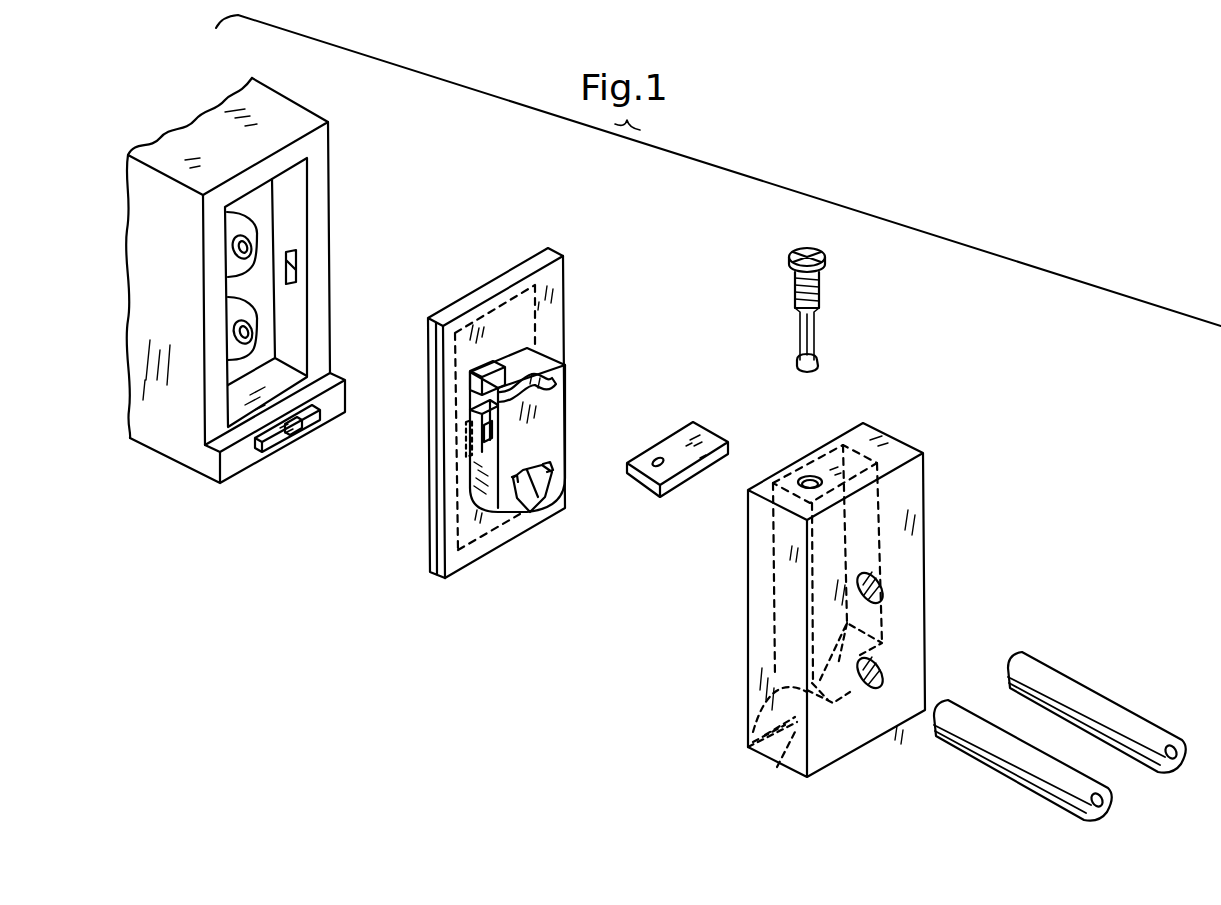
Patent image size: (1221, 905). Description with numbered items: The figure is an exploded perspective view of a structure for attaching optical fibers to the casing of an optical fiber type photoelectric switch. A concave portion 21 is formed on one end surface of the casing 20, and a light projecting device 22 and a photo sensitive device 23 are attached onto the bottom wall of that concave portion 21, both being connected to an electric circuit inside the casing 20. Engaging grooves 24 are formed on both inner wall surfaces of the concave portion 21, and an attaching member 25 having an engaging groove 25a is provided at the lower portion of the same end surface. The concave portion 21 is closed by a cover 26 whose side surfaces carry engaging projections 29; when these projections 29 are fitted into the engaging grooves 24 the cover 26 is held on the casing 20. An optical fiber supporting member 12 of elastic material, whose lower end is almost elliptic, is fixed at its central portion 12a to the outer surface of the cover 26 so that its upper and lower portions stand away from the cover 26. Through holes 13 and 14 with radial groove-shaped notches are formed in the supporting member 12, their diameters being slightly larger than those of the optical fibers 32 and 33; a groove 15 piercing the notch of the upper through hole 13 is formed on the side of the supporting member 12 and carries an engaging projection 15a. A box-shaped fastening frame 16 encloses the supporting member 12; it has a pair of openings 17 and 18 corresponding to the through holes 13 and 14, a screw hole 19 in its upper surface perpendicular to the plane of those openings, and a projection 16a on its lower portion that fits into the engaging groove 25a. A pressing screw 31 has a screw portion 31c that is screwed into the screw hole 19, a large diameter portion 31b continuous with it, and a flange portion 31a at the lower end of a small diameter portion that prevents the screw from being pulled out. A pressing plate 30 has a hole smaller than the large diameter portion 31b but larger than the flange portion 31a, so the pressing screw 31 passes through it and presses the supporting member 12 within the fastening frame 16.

The optical fiber supporting member 12 is at (558, 436).
The central portion 12a is at (468, 410).
The through hole 13 is at (538, 409).
The through hole 14 is at (536, 493).
The groove 15 is at (480, 418).
The engaging projection 15a is at (483, 432).
The fastening frame 16 is at (871, 738).
The projection 16a is at (790, 752).
The opening 17 is at (882, 588).
The opening 18 is at (880, 674).
The screw hole 19 is at (808, 477).
The casing 20 is at (350, 96).
The concave portion 21 is at (305, 186).
The light projecting device 22 is at (232, 244).
The photo sensitive device 23 is at (232, 335).
The engaging groove 24 is at (297, 262).
The attaching member 25 is at (270, 448).
The engaging groove 25a is at (292, 428).
The cover 26 is at (487, 278).
The engaging projection 29 is at (462, 450).
The pressing plate 30 is at (698, 430).
The pressing screw 31 is at (869, 248).
The flange portion 31a is at (822, 364).
The large diameter portion 31b is at (800, 306).
The screw portion 31c is at (794, 288).
The optical fiber 32 is at (1068, 684).
The optical fiber 33 is at (1022, 768).